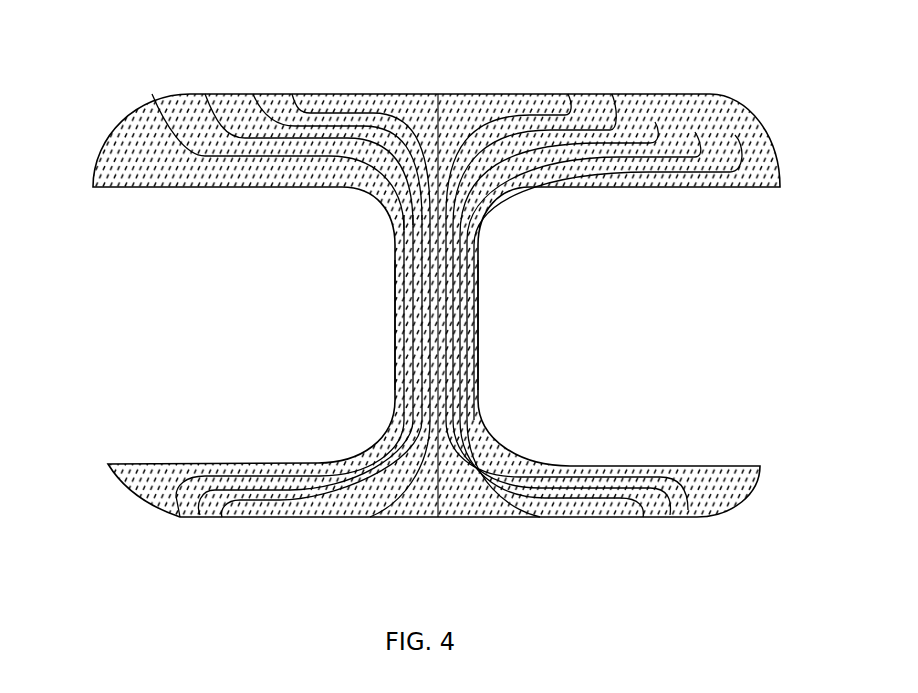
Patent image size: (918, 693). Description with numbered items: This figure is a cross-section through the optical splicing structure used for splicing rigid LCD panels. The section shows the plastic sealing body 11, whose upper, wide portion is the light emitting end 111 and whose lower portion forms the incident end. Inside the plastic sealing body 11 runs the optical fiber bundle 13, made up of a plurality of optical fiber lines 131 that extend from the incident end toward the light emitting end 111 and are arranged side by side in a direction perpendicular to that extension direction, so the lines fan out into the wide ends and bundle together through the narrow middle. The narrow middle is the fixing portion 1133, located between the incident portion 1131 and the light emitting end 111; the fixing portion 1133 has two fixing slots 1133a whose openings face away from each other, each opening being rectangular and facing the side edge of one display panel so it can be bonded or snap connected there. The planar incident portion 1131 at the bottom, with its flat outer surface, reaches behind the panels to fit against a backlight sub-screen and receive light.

The plastic sealing body 11 is at (740, 130).
The light emitting end 111 is at (325, 110).
The optical fiber bundle 13 is at (710, 39).
The optical fiber lines 131 is at (657, 130).
The fixing portion 1133 is at (463, 399).
The fixing slot 1133a is at (173, 350).
The incident portion 1131 is at (413, 500).